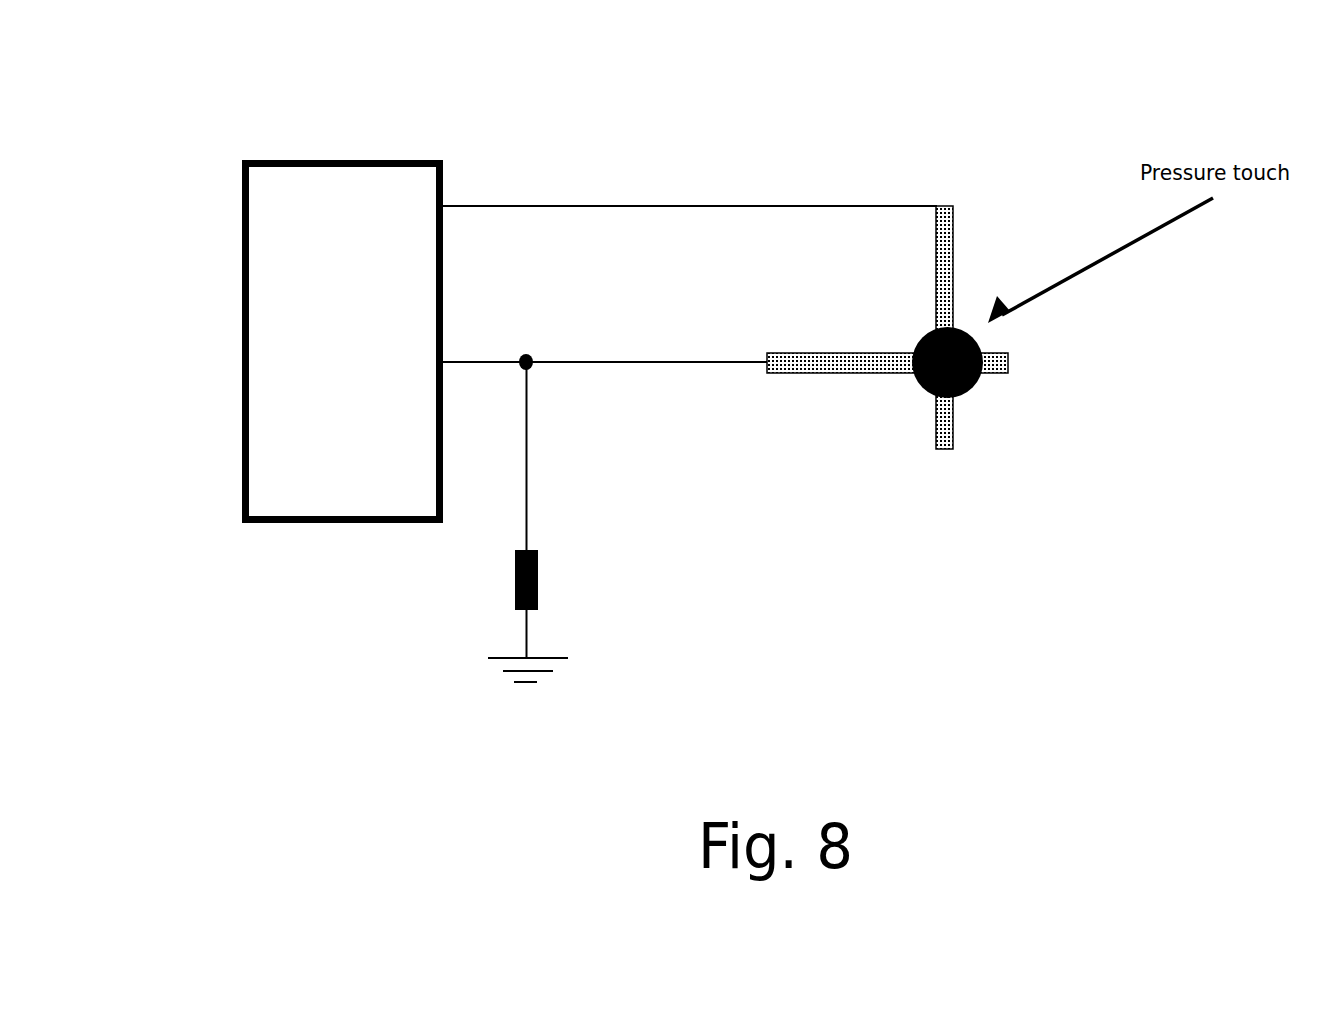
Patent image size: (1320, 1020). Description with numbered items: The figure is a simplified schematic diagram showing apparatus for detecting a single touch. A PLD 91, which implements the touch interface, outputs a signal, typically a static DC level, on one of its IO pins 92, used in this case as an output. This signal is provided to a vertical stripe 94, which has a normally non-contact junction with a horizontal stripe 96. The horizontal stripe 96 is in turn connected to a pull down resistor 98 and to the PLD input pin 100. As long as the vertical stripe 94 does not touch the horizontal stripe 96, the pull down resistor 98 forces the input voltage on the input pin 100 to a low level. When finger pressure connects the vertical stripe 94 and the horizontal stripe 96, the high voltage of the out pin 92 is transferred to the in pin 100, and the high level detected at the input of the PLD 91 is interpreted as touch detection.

The PLD 91 is at (297, 415).
The IO pin 92 is at (645, 187).
The vertical stripe 94 is at (972, 150).
The horizontal stripe 96 is at (798, 373).
The pull down resistor 98 is at (548, 603).
The input pin 100 is at (487, 370).